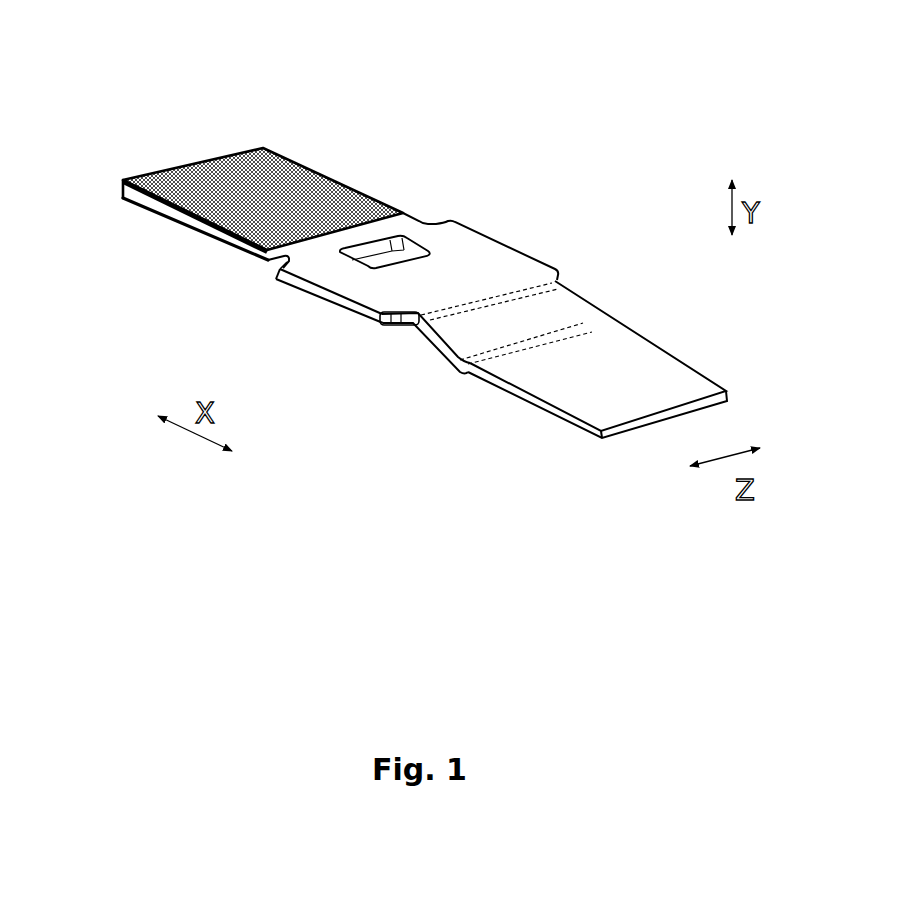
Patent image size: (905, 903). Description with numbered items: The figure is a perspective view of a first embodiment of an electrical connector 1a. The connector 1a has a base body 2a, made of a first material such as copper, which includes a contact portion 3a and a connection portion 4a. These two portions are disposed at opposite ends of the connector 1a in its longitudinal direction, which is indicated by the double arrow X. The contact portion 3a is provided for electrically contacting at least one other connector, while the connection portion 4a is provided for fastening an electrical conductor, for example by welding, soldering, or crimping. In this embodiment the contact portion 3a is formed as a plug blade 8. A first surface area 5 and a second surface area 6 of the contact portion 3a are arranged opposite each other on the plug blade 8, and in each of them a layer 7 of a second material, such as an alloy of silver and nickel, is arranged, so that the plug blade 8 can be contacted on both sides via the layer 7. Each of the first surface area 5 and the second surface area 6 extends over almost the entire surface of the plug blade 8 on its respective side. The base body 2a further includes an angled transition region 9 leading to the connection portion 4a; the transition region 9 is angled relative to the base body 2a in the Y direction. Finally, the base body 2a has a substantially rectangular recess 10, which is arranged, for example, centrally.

The electrical connector 1a is at (423, 280).
The base body 2a is at (406, 280).
The contact portion 3a is at (217, 185).
The connection portion 4a is at (598, 415).
The first surface area 5 is at (247, 177).
The second surface area 6 is at (195, 235).
The layer 7 is at (207, 178).
The plug blade 8 is at (217, 130).
The transition region 9 is at (553, 305).
The recess 10 is at (380, 257).